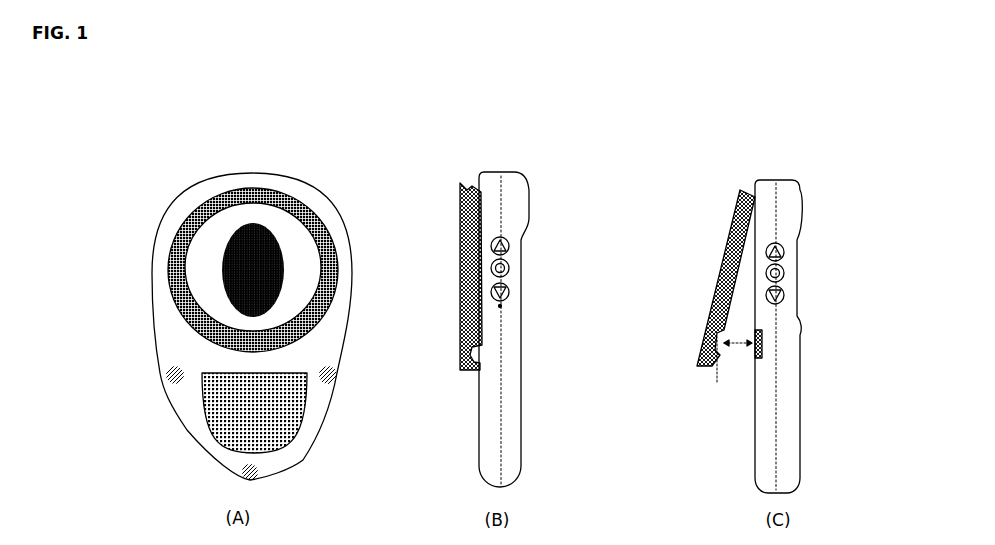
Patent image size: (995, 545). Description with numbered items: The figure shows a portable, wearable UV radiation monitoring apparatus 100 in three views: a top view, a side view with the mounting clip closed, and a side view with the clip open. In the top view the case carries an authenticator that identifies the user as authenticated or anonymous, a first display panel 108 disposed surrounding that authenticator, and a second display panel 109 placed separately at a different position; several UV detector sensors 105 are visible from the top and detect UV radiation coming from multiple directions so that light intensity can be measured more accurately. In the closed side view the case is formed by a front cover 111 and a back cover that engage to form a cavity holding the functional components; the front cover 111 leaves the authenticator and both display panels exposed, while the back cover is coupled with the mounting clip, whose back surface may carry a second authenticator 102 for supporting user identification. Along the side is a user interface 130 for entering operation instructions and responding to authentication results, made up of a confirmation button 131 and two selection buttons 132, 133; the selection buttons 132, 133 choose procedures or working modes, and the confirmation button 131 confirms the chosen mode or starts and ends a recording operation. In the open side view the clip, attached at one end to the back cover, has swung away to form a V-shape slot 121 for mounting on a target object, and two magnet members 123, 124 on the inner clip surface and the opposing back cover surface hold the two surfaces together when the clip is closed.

The UV radiation monitoring apparatus 100 is at (283, 91).
The second authenticator 102 is at (458, 263).
The UV detector sensors 105 is at (157, 382).
The first display panel 108 is at (200, 218).
The second display panel 109 is at (202, 373).
The front cover 111 is at (513, 463).
The V-shape slot 121 is at (745, 332).
The magnet member 123 is at (724, 368).
The magnet member 124 is at (757, 362).
The user interface 130 is at (513, 262).
The confirmation button 131 is at (786, 278).
The selection button 132 is at (783, 302).
The selection button 133 is at (784, 251).